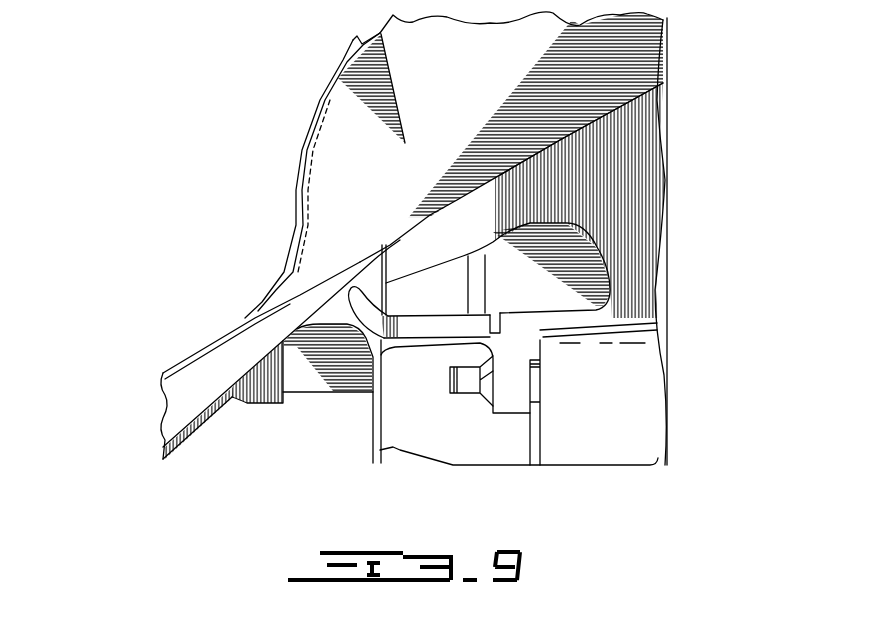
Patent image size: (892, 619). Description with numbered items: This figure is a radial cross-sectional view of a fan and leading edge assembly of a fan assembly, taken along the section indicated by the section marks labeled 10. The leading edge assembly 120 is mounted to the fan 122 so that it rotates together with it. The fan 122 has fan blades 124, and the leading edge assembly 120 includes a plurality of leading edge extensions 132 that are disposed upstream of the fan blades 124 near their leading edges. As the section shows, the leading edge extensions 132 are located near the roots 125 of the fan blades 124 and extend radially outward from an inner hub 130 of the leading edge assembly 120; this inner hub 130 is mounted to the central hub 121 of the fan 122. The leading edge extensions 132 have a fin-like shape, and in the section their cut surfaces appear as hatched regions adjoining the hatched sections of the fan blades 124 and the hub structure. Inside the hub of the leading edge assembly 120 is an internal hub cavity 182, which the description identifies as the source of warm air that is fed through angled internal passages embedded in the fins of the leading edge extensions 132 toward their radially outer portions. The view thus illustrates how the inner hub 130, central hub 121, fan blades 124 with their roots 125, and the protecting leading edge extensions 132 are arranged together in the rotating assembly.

The vehicle body section 10 is at (240, 242).
The leading edge assembly 120 is at (200, 340).
The central hub 121 is at (620, 220).
The fan 122 is at (673, 167).
The fan blades 124 is at (507, 70).
The roots 125 is at (578, 107).
The inner hub 130 is at (247, 405).
The leading edge extensions 132 is at (318, 165).
The internal hub cavity 182 is at (440, 322).